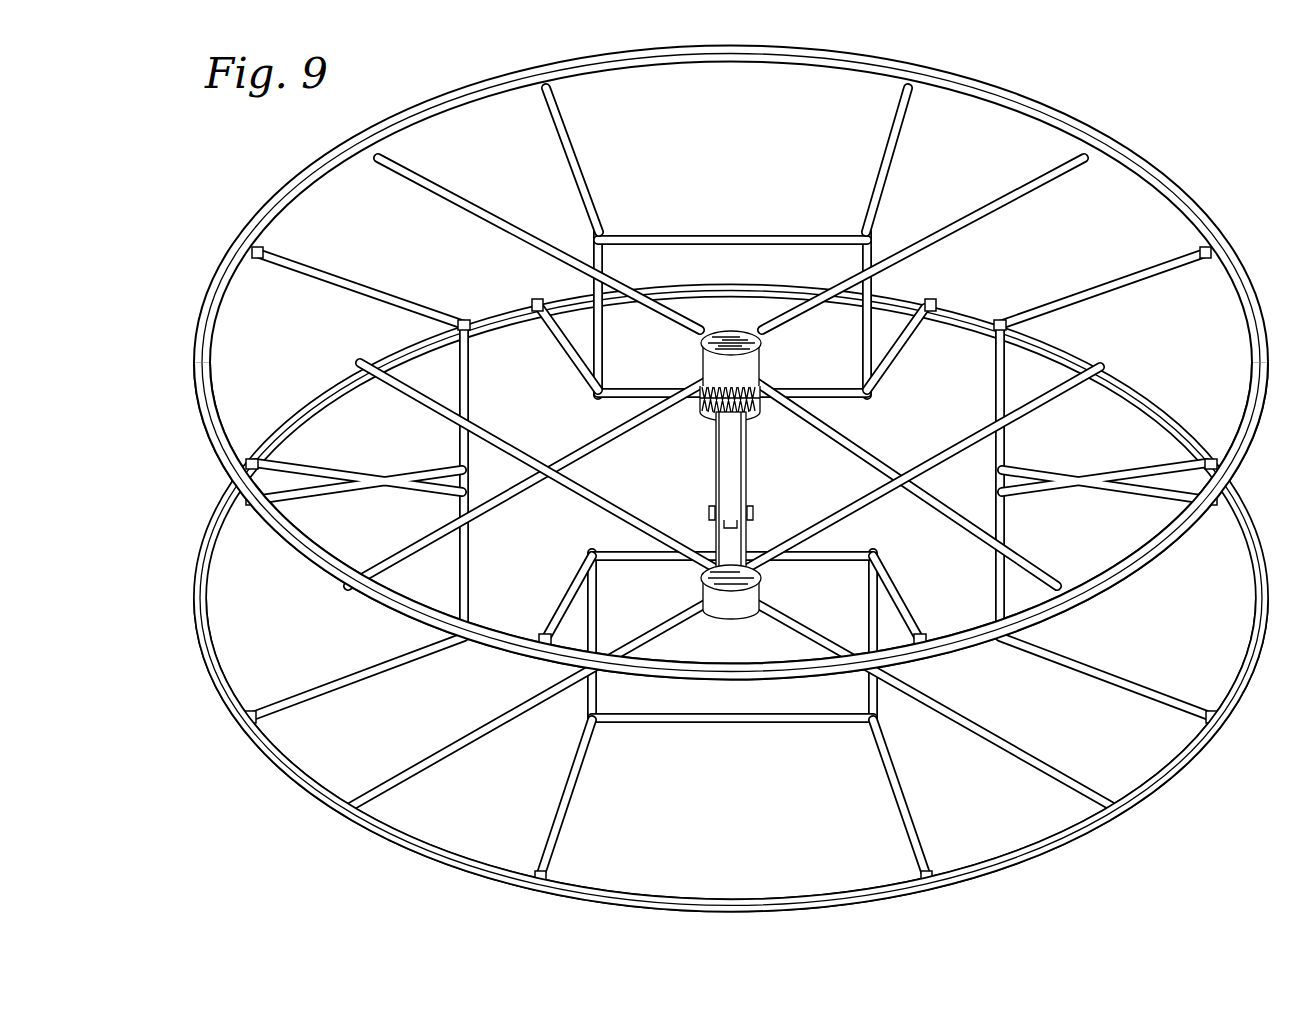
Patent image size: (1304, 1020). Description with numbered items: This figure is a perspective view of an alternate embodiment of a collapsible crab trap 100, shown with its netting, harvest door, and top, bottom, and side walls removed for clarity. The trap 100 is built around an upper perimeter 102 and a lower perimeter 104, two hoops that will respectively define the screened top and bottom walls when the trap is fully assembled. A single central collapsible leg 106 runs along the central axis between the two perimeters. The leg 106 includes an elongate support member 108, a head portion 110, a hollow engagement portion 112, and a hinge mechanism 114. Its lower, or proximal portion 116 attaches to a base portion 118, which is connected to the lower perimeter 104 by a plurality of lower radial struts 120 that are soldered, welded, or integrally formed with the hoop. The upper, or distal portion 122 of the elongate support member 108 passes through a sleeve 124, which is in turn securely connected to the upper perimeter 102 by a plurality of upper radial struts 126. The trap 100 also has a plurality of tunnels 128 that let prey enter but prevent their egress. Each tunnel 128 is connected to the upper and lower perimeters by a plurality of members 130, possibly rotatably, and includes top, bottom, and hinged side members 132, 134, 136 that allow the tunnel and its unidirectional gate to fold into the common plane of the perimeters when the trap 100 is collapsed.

The trap 100 is at (1112, 96).
The upper perimeter 102 is at (203, 345).
The lower perimeter 104 is at (203, 600).
The central collapsible leg 106 is at (745, 474).
The elongate support member 108 is at (716, 478).
The head portion 110 is at (735, 335).
The hollow engagement portion 112 is at (758, 412).
The hinge mechanism 114 is at (756, 512).
The proximal portion 116 is at (716, 527).
The base portion 118 is at (738, 608).
The lower radial struts 120 is at (450, 752).
The distal portion 122 is at (716, 448).
The sleeve 124 is at (760, 368).
The upper radial struts 126 is at (483, 207).
The tunnels 128 is at (731, 482).
The members 130 is at (580, 165).
The top members 132 is at (712, 238).
The bottom members 134 is at (615, 393).
The hinged side members 136 is at (605, 258).